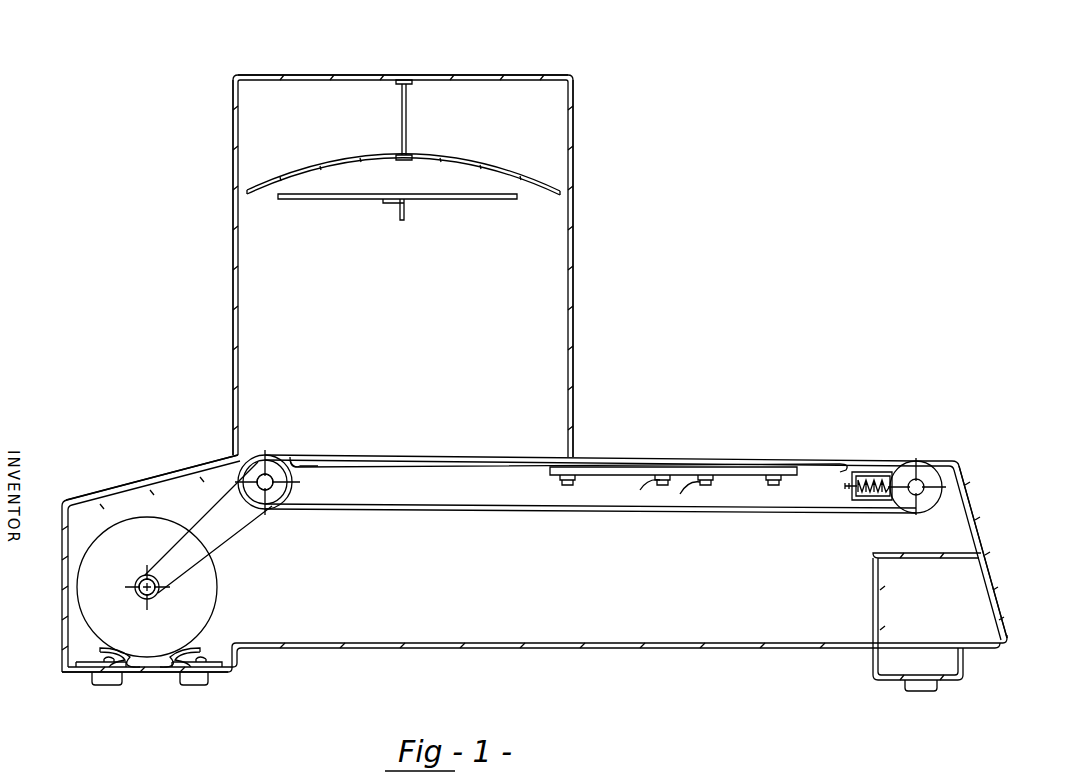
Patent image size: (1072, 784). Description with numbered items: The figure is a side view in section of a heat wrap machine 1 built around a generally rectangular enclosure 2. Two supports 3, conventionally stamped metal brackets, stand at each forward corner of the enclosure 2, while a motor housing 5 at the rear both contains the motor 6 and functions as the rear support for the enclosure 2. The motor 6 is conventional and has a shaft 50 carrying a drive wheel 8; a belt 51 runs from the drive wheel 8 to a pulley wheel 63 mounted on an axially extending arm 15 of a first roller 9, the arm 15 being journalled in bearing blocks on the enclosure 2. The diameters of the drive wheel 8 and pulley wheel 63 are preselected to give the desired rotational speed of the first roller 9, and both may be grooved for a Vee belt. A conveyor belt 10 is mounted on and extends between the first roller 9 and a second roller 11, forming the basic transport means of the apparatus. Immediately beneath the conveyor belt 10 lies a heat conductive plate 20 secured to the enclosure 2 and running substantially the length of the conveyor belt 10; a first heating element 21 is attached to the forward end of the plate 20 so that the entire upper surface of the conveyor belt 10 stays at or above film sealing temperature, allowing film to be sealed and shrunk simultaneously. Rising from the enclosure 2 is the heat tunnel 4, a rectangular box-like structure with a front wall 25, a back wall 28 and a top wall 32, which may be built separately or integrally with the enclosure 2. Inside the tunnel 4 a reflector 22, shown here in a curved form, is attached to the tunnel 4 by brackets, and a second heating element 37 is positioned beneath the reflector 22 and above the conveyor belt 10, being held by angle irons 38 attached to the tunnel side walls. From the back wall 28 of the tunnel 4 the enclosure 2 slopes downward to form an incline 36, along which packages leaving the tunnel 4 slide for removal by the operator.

The heat wrap machine 1 is at (996, 512).
The enclosure 2 is at (1012, 609).
The supports 3 is at (963, 686).
The heat tunnel 4 is at (586, 286).
The motor housing 5 is at (56, 668).
The motor 6 is at (202, 624).
The drive wheel 8 is at (158, 587).
The first roller 9 is at (290, 499).
The conveyor belt 10 is at (531, 513).
The second roller 11 is at (912, 505).
The axially extending arm 15 is at (267, 478).
The plate 20 is at (640, 468).
The first heating element 21 is at (738, 472).
The reflector 22 is at (455, 153).
The front wall 25 is at (575, 172).
The back wall 28 is at (230, 170).
The top wall 32 is at (466, 73).
The incline 36 is at (170, 472).
The second heating element 37 is at (466, 200).
The angle irons 38 is at (396, 220).
The shaft 50 is at (140, 580).
The belt 51 is at (220, 534).
The pulley wheel 63 is at (290, 480).